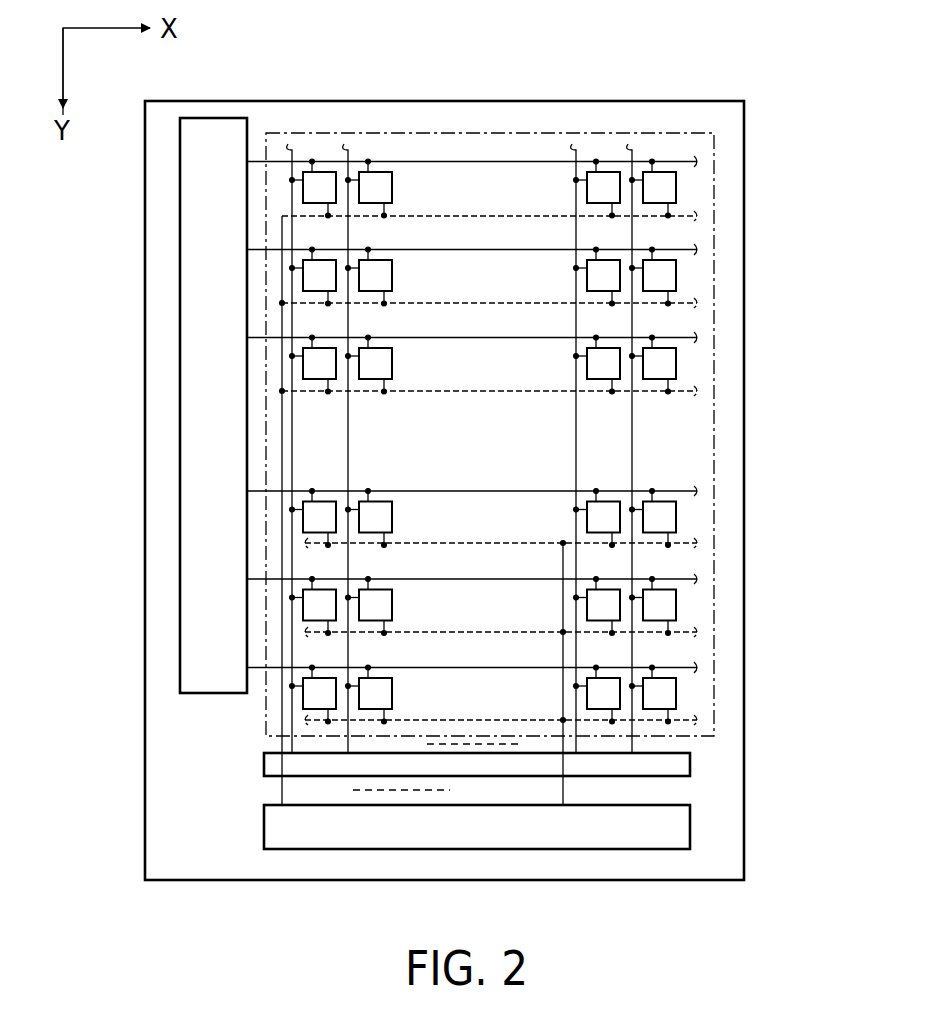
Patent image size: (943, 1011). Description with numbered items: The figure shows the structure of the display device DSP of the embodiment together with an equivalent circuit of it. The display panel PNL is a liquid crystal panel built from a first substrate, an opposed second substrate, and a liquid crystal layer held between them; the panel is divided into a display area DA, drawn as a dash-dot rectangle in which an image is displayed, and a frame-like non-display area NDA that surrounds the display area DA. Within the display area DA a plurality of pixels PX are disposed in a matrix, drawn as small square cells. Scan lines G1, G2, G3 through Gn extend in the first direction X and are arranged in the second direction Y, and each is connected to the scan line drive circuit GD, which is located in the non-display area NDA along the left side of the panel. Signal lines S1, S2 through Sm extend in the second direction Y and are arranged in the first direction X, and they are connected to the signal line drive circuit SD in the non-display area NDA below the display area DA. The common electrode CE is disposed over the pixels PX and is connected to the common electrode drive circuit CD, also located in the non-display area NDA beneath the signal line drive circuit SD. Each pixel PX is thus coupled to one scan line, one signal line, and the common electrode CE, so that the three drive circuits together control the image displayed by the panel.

The display panel PNL is at (719, 872).
The display device DSP is at (731, 70).
The scan line drive circuit GD is at (216, 118).
The display area DA is at (471, 149).
The non-display area NDA is at (566, 120).
The signal line drive circuit SD is at (690, 766).
The common electrode drive circuit CD is at (690, 830).
The signal line S1 is at (292, 148).
The signal line S2 is at (348, 148).
The signal line Sm is at (632, 148).
The scan line G1 is at (682, 163).
The scan line G2 is at (682, 251).
The scan line G3 is at (682, 339).
The scan line Gn is at (682, 669).
The common electrode CE is at (284, 421).
The pixel PX is at (393, 186).